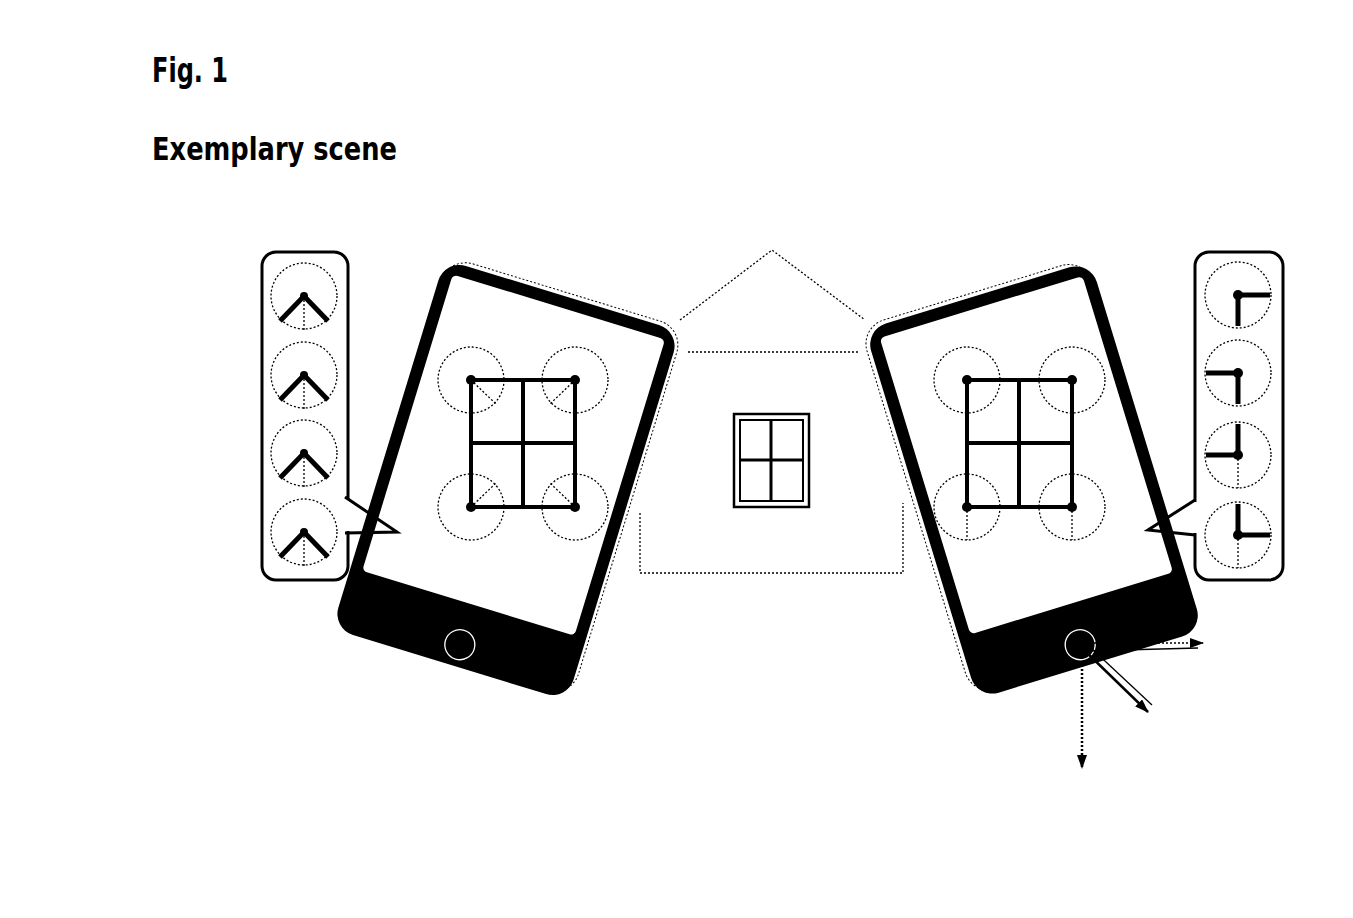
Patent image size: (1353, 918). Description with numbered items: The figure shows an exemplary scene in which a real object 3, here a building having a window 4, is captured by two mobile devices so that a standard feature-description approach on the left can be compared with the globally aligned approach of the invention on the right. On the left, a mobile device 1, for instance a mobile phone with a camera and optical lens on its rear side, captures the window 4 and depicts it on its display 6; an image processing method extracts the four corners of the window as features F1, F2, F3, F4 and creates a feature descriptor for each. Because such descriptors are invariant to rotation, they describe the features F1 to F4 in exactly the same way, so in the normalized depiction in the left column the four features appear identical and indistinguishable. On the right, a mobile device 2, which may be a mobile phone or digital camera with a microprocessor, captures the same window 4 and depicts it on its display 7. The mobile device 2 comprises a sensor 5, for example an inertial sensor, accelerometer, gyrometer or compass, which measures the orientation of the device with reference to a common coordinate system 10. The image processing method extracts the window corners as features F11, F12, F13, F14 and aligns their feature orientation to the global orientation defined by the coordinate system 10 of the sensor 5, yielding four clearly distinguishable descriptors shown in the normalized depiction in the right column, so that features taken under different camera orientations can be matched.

The mobile device 1 is at (390, 658).
The mobile device 2 is at (943, 650).
The real object 3 is at (732, 565).
The window 4 is at (800, 500).
The sensor 5 is at (1067, 687).
The display 6 is at (487, 298).
The display 7 is at (1005, 320).
The common coordinate system 10 is at (1130, 680).
The feature F1 is at (270, 290).
The feature F2 is at (270, 373).
The feature F3 is at (270, 447).
The feature F4 is at (270, 530).
The feature F11 is at (1267, 282).
The feature F12 is at (1268, 367).
The feature F13 is at (1267, 438).
The feature F14 is at (1268, 512).